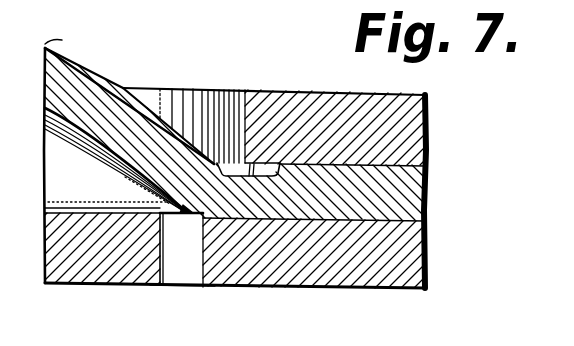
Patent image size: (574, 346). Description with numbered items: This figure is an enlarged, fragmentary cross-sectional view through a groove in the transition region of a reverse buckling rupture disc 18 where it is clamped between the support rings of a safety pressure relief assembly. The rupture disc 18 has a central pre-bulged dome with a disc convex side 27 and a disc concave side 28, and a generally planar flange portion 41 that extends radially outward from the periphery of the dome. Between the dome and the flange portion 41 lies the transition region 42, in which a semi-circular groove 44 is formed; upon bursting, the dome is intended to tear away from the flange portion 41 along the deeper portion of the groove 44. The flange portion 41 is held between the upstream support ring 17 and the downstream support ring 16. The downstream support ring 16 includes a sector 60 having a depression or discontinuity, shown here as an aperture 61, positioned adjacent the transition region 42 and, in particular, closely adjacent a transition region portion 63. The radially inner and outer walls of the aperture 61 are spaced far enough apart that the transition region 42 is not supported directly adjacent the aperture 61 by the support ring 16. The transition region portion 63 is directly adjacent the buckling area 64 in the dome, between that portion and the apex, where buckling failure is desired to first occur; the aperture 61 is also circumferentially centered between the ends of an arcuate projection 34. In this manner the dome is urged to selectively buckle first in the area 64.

The downstream support ring 16 is at (410, 260).
The upstream support ring 17 is at (414, 133).
The reverse buckling rupture disc 18 is at (66, 57).
The disc convex side 27 is at (88, 47).
The disc concave side 28 is at (103, 145).
The arcuate projection 34 is at (118, 249).
The flange portion 41 is at (408, 198).
The transition region 42 is at (185, 214).
The semi-circular groove 44 is at (247, 174).
The sector 60 is at (162, 286).
The aperture 61 is at (204, 252).
The transition region portion 63 is at (257, 165).
The buckling area 64 is at (222, 152).